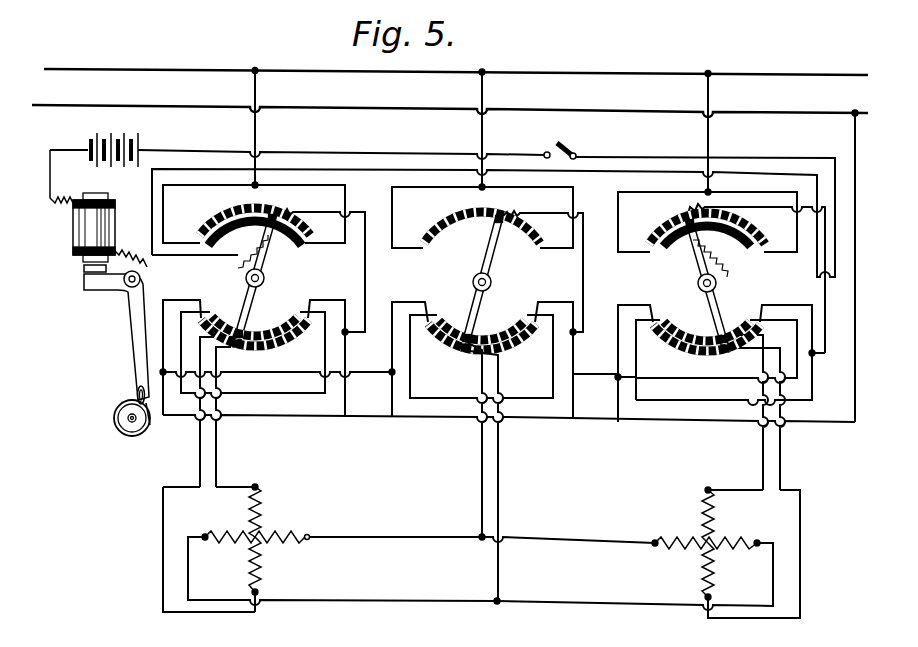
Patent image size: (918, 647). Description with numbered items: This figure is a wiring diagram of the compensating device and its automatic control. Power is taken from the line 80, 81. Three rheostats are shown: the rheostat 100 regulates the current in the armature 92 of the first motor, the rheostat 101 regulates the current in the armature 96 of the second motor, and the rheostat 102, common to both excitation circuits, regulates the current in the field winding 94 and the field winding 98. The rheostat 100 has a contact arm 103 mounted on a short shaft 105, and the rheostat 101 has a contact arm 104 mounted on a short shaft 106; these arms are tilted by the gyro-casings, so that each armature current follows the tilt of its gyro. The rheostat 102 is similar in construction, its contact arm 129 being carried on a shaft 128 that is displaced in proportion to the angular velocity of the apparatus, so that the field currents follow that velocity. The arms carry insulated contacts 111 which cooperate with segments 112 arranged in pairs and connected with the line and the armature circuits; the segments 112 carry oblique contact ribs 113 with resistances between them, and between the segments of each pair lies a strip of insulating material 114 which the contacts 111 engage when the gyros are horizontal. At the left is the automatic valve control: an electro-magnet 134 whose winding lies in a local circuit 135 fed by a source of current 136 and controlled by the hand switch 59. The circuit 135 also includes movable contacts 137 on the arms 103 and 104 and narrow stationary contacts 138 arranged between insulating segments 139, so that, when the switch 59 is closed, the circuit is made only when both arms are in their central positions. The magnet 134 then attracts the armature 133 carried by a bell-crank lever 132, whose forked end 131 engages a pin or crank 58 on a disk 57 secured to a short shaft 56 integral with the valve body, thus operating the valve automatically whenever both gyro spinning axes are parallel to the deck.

The line 80 is at (456, 62).
The line 81 is at (450, 101).
The source of current 136 is at (141, 146).
The local circuit 135 is at (352, 145).
The hand switch 59 is at (572, 151).
The electro-magnet 134 is at (74, 226).
The armature 133 is at (85, 270).
The bell-crank lever 132 is at (134, 330).
The forked end 131 is at (137, 393).
The disk 57 is at (118, 414).
The short shaft 56 is at (128, 423).
The pin or crank 58 is at (148, 426).
The rheostat 100 is at (264, 336).
The rheostat 101 is at (720, 341).
The rheostat 102 is at (487, 394).
The contact arm 103 is at (240, 300).
The short shaft 105 is at (250, 288).
The movable contact 137 is at (268, 250).
The stationary contact 138 is at (213, 238).
The insulating segment 139 is at (297, 245).
The insulated contact 111 is at (274, 213).
The segment 112 is at (240, 348).
The contact rib 113 is at (302, 326).
The strip of insulating material 114 is at (248, 210).
The contact arm 129 is at (496, 258).
The shaft 128 is at (493, 285).
The contact arm 104 is at (718, 290).
The short shaft 106 is at (702, 290).
The field winding 94 is at (262, 507).
The armature 92 is at (280, 547).
The field winding 98 is at (705, 504).
The armature 96 is at (669, 548).